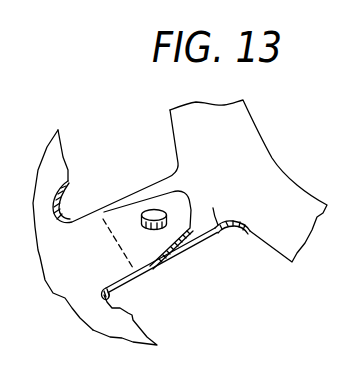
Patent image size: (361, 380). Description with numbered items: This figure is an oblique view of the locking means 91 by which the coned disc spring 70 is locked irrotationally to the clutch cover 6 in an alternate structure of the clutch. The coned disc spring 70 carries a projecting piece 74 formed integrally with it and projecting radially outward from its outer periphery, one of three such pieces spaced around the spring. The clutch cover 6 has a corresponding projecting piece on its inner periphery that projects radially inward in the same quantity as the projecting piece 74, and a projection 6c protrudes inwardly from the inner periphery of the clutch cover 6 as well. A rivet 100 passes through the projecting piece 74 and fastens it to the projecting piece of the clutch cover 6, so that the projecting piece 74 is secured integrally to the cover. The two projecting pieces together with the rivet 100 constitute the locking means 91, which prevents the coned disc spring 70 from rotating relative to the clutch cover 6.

The clutch cover 6 is at (85, 298).
The projection 6c is at (116, 259).
The coned disc spring 70 is at (267, 177).
The projecting piece 74 is at (212, 237).
The locking means 91 is at (205, 290).
The rivet 100 is at (148, 213).